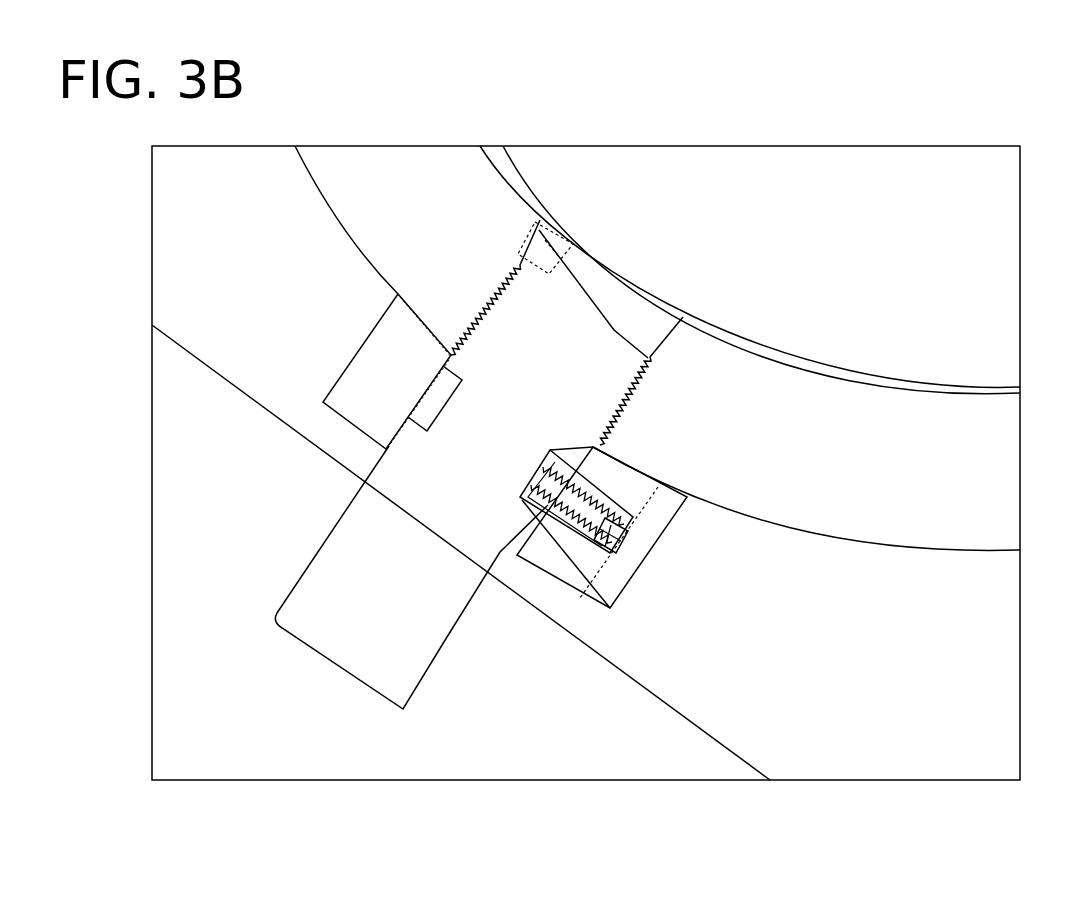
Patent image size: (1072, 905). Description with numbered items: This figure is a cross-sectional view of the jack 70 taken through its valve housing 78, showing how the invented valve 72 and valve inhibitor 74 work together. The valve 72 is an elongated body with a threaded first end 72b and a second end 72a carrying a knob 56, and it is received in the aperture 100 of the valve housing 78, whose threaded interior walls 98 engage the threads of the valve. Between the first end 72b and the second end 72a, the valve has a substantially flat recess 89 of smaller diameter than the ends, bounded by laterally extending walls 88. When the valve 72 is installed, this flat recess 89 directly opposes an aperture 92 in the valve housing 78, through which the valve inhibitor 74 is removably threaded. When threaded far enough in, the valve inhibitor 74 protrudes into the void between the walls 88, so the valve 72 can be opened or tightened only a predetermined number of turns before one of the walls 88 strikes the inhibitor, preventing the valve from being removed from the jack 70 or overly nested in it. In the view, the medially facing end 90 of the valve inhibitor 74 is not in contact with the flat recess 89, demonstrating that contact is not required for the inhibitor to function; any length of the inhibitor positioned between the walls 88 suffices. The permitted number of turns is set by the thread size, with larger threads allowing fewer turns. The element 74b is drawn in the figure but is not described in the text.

The jack 70 is at (138, 226).
The valve 72 is at (499, 342).
The second end 72a is at (345, 675).
The first end 72b is at (617, 330).
The valve inhibitor 74 is at (573, 513).
The inner tube wall 74b is at (603, 549).
The valve housing 78 is at (375, 373).
The laterally extending walls 88 is at (565, 485).
The flat recess 89 is at (450, 410).
The medially facing end 90 is at (533, 473).
The aperture 92 is at (637, 517).
The interior walls 98 is at (535, 226).
The aperture 100 is at (547, 230).
The knob 56 is at (358, 587).